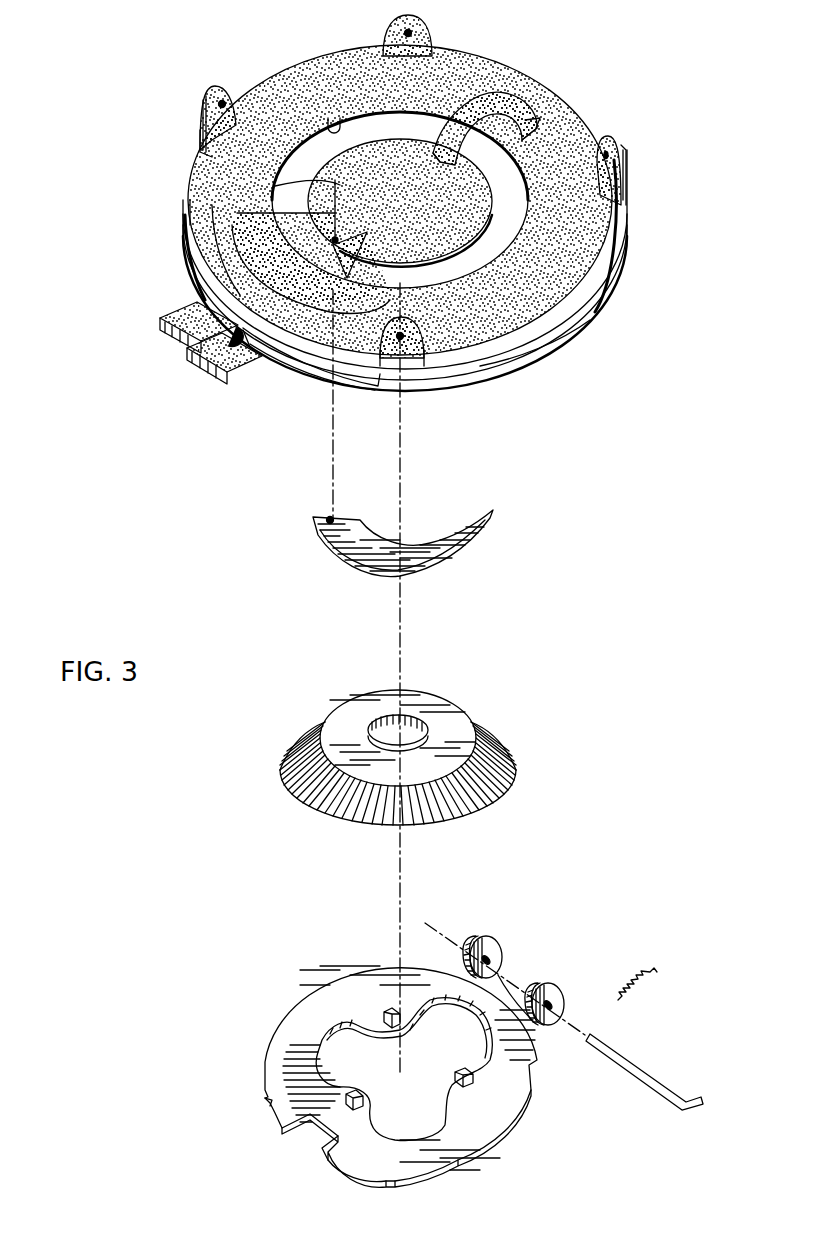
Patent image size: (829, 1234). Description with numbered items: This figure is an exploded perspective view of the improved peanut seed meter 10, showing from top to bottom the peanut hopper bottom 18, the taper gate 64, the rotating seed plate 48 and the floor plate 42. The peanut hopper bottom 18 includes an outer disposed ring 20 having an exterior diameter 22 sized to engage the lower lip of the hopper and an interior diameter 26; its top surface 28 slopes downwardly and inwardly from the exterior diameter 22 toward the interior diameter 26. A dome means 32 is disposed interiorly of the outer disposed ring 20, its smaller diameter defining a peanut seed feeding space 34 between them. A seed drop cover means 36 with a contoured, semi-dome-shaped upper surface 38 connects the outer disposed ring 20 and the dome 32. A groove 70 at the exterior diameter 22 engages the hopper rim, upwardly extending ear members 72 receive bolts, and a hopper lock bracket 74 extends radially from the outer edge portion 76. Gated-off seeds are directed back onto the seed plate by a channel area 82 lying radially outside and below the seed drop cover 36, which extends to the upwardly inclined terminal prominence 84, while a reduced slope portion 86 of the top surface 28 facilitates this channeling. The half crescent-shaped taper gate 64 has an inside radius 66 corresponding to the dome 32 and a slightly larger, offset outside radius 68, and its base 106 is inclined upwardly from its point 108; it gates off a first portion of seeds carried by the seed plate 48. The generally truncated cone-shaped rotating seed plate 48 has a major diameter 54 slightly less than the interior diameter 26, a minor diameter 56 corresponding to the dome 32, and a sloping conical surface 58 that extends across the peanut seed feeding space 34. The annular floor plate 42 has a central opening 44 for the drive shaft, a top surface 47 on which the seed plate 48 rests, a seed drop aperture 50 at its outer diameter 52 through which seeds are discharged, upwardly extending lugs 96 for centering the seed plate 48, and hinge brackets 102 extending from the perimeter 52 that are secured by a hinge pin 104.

The improved peanut seed meter 10 is at (627, 752).
The peanut hopper bottom portion 18 is at (637, 250).
The outer disposed ring 20 is at (573, 137).
The exterior diameter 22 is at (595, 296).
The interior diameter 26 is at (331, 118).
The top surface 28 is at (574, 187).
The dome means 32 is at (404, 198).
The peanut seed feeding space 34 is at (425, 122).
The seed drop cover means 36 is at (283, 233).
The upper surface 38 is at (292, 286).
The floor plate 42 is at (262, 1047).
The central opening 44 is at (414, 1121).
The top surface 47 is at (498, 1114).
The rotating seed plate 48 is at (278, 789).
The seed drop aperture 50 is at (310, 1137).
The outer diameter 52 is at (274, 1113).
The major diameter 54 is at (512, 768).
The minor diameter 56 is at (507, 750).
The sloping conical surface 58 is at (518, 755).
The taper gate 64 is at (288, 546).
The inside radius 66 is at (417, 542).
The outside radius 68 is at (443, 560).
The groove 70 is at (552, 340).
The ear members 72 is at (400, 18).
The hopper lock bracket 74 is at (200, 348).
The outer edge portion 76 is at (283, 372).
The channel area 82 is at (235, 268).
The terminal prominence 84 is at (275, 186).
The reduced slope portion 86 is at (335, 340).
The lugs 96 is at (530, 1068).
The hinge brackets 102 is at (488, 945).
The hinge pin 104 is at (630, 1062).
The base 106 is at (340, 527).
The point 108 is at (493, 510).